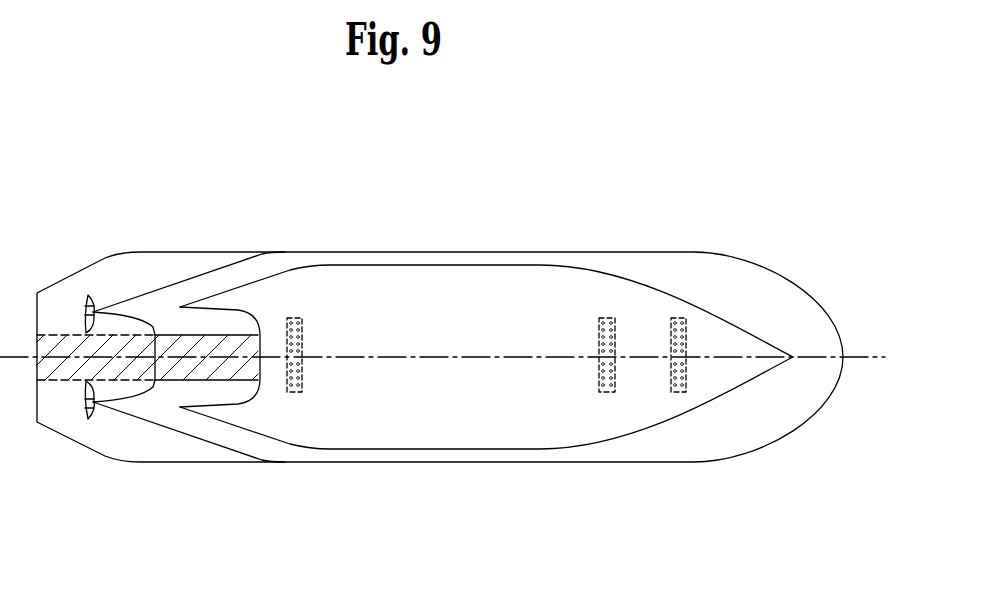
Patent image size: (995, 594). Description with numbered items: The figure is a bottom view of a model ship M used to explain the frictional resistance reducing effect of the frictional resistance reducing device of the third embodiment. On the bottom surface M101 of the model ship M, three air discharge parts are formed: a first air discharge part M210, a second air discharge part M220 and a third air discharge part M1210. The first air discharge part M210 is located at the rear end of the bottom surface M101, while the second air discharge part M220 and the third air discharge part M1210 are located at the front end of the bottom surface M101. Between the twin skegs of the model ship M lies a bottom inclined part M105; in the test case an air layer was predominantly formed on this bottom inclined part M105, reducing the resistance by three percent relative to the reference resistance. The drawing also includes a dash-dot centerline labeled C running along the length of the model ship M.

The model ship M is at (122, 226).
The bottom surface M101 is at (453, 432).
The bottom inclined part M105 is at (173, 345).
The third air discharge part M1210 is at (292, 318).
The second air discharge part M220 is at (605, 318).
The first air discharge part M210 is at (678, 318).
The center axis C is at (452, 357).